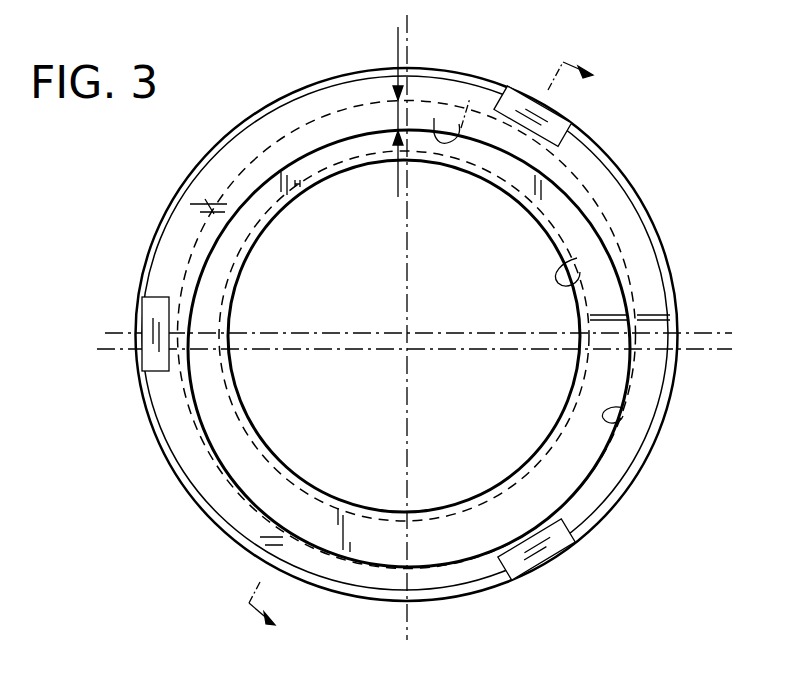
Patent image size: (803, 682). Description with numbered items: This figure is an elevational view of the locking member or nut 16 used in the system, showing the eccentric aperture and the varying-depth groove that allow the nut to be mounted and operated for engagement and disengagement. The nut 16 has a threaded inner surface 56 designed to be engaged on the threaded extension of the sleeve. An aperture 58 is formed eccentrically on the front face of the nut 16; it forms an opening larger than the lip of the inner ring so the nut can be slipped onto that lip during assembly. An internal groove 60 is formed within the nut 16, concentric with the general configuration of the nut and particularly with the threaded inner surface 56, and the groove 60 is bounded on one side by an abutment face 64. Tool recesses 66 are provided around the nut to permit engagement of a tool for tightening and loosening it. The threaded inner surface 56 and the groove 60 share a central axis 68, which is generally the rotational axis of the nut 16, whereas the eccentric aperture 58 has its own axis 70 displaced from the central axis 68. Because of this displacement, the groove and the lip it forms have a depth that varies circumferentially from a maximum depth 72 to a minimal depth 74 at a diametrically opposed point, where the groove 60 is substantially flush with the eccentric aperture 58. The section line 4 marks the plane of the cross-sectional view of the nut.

The nut 16 is at (648, 460).
The threaded inner surface 56 is at (577, 258).
The aperture 58 is at (623, 408).
The internal groove 60 is at (434, 118).
The abutment face 64 is at (250, 462).
The tool recesses 66 is at (146, 312).
The central axis 68 is at (407, 333).
The axis 70 is at (407, 349).
The maximum depth 72 is at (396, 52).
The minimal depth 74 is at (388, 580).
The section line 4- 4 is at (409, 337).